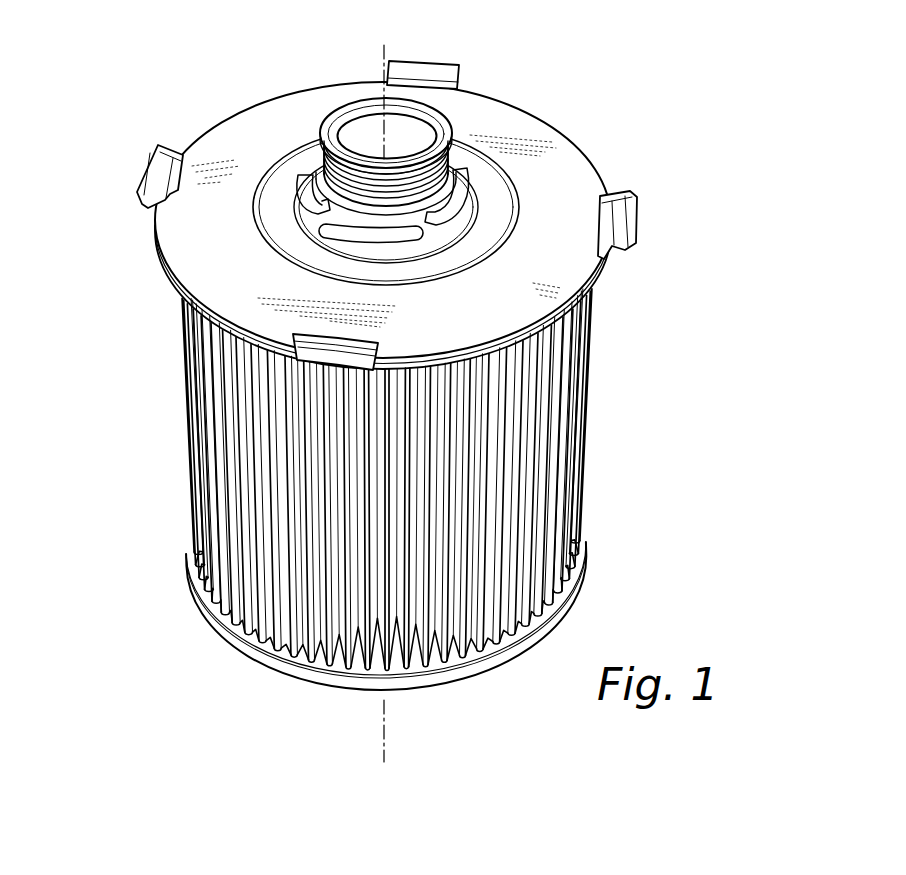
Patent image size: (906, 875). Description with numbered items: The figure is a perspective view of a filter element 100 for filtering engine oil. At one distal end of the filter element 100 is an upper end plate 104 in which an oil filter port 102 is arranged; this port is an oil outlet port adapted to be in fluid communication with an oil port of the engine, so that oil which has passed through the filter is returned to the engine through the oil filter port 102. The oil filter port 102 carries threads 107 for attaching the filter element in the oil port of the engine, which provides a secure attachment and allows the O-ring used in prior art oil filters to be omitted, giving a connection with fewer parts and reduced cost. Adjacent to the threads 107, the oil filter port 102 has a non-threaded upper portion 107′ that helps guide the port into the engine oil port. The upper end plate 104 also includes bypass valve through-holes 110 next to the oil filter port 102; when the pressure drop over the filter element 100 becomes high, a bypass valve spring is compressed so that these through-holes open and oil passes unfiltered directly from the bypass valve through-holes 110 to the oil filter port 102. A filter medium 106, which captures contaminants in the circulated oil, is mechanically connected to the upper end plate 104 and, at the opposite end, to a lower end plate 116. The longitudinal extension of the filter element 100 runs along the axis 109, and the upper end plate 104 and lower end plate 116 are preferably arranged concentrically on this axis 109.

The filter element 100 is at (677, 87).
The oil filter port 102 is at (348, 102).
The upper end plate 104 is at (203, 258).
The filter medium 106 is at (196, 442).
The threads 107 is at (451, 158).
The non-threaded upper portion 107′ is at (447, 129).
The axis 109 is at (383, 718).
The bypass valve through-holes 110 is at (312, 192).
The lower end plate 116 is at (573, 572).